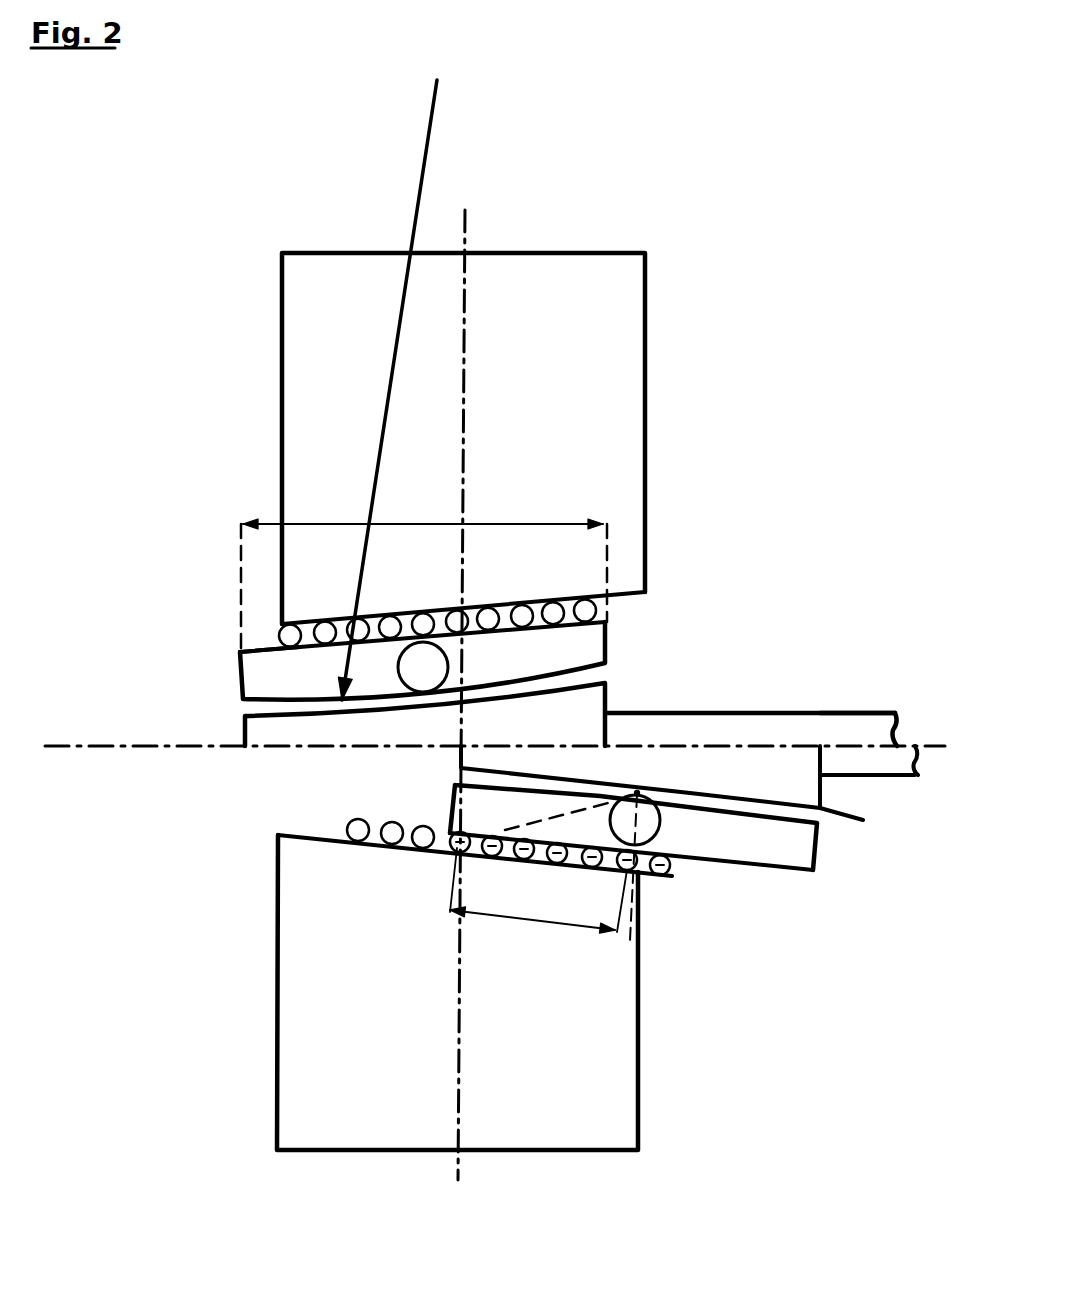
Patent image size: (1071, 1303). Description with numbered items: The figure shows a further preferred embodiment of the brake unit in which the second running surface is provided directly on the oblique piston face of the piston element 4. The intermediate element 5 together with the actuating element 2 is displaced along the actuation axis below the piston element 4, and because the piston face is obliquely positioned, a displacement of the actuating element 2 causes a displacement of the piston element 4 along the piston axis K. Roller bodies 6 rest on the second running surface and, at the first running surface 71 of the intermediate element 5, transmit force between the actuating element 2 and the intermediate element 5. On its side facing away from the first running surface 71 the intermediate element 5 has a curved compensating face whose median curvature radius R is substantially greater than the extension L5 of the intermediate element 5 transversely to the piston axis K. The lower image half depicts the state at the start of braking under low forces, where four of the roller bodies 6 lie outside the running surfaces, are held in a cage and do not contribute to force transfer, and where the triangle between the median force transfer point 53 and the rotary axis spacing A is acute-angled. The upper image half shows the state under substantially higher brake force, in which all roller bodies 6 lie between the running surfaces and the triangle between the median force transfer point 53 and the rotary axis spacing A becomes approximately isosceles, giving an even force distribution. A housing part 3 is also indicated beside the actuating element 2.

The actuating element 2 is at (607, 690).
The housing part 3 is at (855, 745).
The piston element 4 is at (627, 367).
The intermediate element 5 is at (600, 640).
The roller bodies 6 is at (600, 600).
The median force transfer point 53 is at (640, 792).
The first running surface 71 is at (277, 648).
The median curvature radius R is at (433, 122).
The piston axis K is at (467, 335).
The extension of the intermediate element L5 is at (372, 508).
The rotary axis spacing A is at (555, 928).